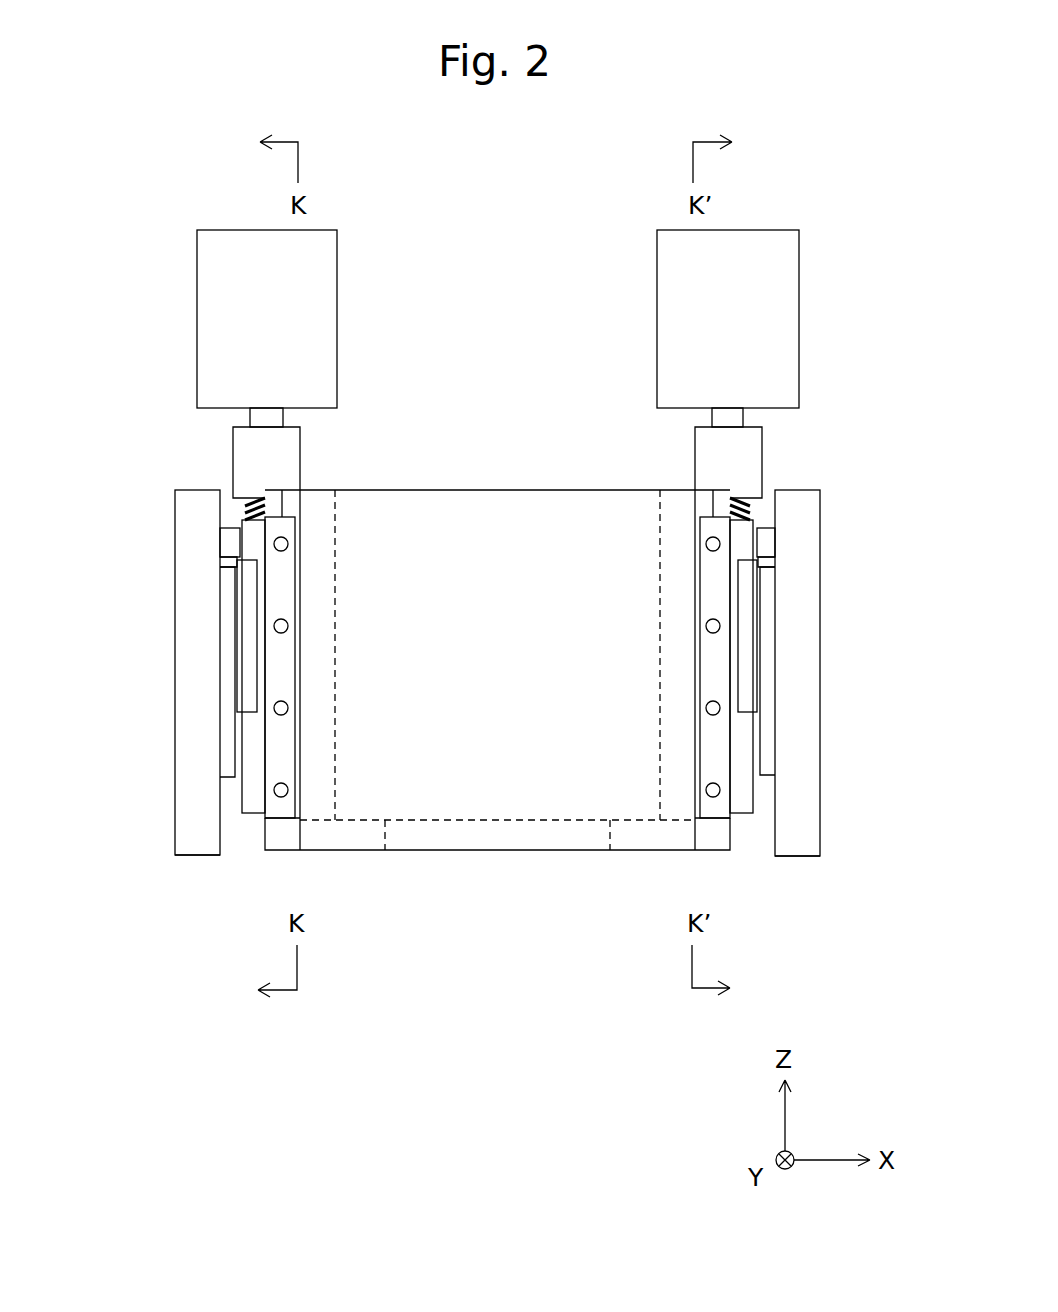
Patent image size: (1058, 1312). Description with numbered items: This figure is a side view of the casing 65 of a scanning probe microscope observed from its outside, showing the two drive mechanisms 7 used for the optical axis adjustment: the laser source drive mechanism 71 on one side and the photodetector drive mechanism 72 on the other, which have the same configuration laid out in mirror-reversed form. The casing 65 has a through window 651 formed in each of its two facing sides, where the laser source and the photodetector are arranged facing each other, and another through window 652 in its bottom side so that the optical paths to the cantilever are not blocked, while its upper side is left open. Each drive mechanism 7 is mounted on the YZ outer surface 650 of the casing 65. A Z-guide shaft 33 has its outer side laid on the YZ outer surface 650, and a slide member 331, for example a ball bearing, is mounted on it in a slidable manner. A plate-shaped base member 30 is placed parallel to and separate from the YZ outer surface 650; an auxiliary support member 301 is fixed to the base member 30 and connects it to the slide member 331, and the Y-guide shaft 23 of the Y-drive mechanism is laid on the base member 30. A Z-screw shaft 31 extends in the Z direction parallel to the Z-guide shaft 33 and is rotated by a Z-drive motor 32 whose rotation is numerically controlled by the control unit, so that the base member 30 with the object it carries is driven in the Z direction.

The drive mechanism 7 is at (490, 905).
The laser source drive mechanism 71 is at (825, 878).
The photodetector drive mechanism 72 is at (160, 886).
The Y-guide shaft 23 is at (767, 528).
The base member 30 is at (820, 713).
The auxiliary support member 301 is at (767, 777).
The Z-screw shaft 31 is at (750, 500).
The Z-drive motor 32 is at (825, 275).
The Z-guide shaft 33 is at (750, 815).
The slide member 331 is at (758, 613).
The casing 65 is at (357, 850).
The YZ outer surface 650 is at (740, 862).
The through window 651 is at (302, 590).
The through window 652 is at (400, 852).